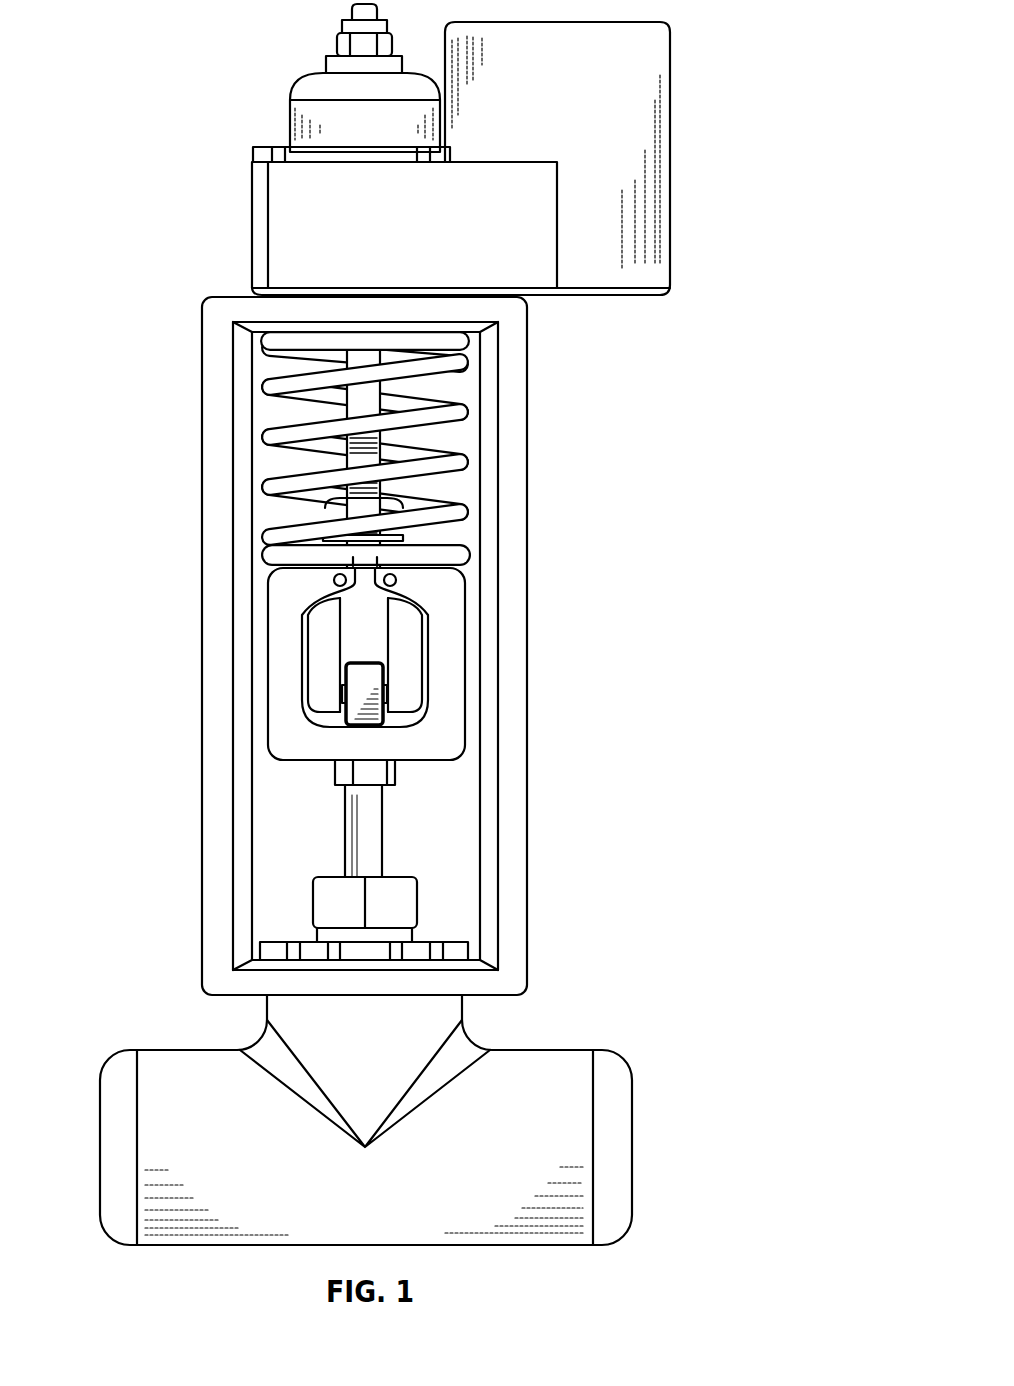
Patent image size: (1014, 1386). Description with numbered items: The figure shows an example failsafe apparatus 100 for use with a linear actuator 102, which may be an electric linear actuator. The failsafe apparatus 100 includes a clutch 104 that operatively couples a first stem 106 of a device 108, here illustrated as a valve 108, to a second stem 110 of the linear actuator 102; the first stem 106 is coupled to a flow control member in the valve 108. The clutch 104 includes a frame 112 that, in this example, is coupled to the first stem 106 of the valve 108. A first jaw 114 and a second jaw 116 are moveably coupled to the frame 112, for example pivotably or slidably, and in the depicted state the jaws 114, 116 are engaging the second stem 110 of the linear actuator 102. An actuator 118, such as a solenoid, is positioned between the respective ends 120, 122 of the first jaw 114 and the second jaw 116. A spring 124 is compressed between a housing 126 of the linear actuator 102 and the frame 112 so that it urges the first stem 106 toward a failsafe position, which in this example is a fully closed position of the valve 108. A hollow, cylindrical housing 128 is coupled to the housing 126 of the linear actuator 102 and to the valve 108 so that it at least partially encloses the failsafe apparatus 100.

The failsafe apparatus 100 is at (518, 548).
The linear actuator 102 is at (694, 165).
The clutch 104 is at (368, 658).
The first stem 106 is at (370, 818).
The valve 108 is at (657, 1148).
The second stem 110 is at (365, 398).
The frame 112 is at (453, 607).
The first jaw 114 is at (410, 637).
The second jaw 116 is at (313, 652).
The actuator 118 is at (355, 712).
The end of first jaw 120 is at (410, 710).
The end of second jaw 122 is at (323, 710).
The spring 124 is at (436, 455).
The housing 126 is at (428, 237).
The hollow cylindrical housing 128 is at (214, 346).